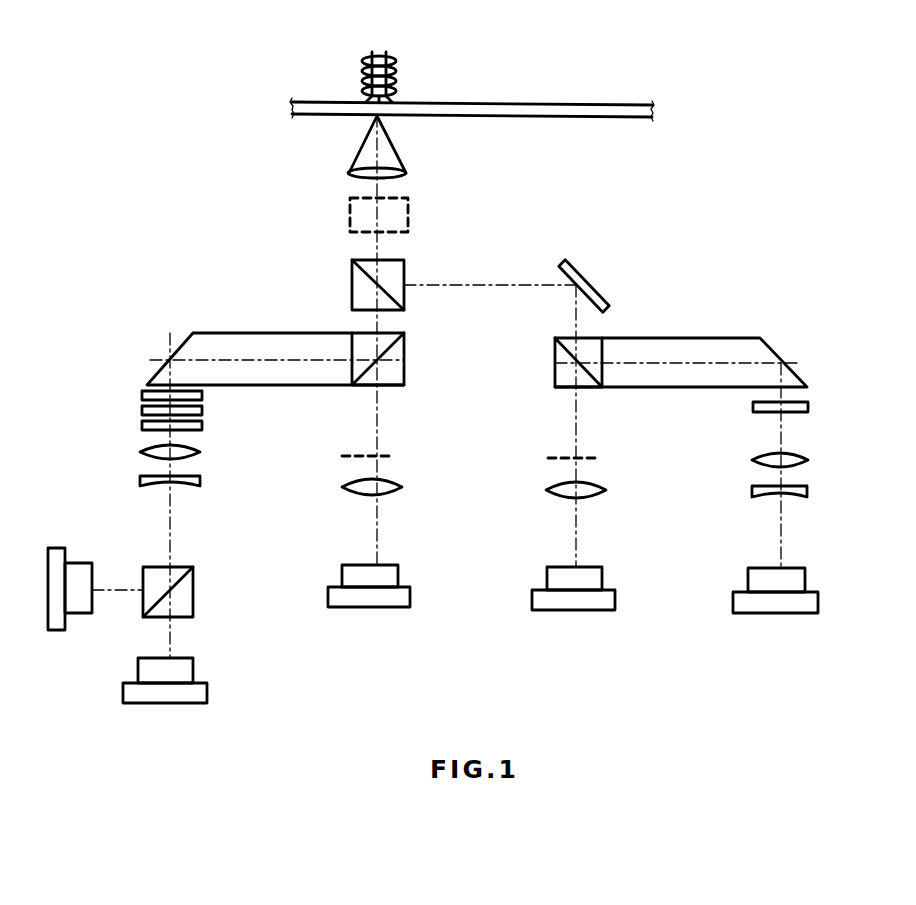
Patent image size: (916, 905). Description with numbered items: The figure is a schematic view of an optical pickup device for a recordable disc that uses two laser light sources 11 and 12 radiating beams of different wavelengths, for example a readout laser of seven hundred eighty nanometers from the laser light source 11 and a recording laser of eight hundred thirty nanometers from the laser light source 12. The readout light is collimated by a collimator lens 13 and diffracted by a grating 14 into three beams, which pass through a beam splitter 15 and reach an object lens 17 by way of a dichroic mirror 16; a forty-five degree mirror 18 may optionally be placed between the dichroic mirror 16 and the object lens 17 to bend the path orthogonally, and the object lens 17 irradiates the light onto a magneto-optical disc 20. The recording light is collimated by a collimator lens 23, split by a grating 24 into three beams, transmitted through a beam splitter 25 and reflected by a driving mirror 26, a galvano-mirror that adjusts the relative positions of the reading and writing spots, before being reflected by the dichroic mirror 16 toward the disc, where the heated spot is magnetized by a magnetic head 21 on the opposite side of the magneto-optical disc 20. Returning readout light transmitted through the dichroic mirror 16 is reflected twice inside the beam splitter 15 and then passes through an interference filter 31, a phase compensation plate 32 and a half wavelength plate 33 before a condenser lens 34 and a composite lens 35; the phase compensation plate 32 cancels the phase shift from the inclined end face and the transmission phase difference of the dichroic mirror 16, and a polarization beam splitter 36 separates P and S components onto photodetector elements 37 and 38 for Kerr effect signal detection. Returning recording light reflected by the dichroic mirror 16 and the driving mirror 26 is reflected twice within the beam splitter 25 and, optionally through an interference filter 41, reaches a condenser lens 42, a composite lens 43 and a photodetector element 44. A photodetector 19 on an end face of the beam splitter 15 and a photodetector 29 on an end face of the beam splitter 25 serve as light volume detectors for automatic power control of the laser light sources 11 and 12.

The laser light source 11 is at (392, 580).
The laser light source 12 is at (577, 602).
The collimator lens 13 is at (396, 486).
The grating 14 is at (392, 456).
The beam splitter 15 is at (258, 342).
The dichroic mirror 16 is at (397, 272).
The object lens 17 is at (404, 171).
The 45° mirror 18 is at (408, 214).
The photodetector 19 is at (404, 372).
The magneto-optical disc 20 is at (603, 105).
The magnetic head 21 is at (397, 76).
The collimator lens 23 is at (600, 488).
The grating 24 is at (598, 458).
The beam splitter 25 is at (680, 340).
The driving mirror 26 is at (580, 264).
The photodetector 29 is at (555, 374).
The interference filter 31 is at (142, 395).
The phase compensation plate 32 is at (142, 410).
The ½ wavelength plate 33 is at (142, 426).
The condenser lens 34 is at (194, 450).
The composite lens 35 is at (200, 482).
The polarization beam splitter 36 is at (186, 588).
The photodetector element 37 is at (83, 610).
The photodetector element 38 is at (183, 665).
The interference filter 41 is at (808, 405).
The condenser lens 42 is at (806, 459).
The composite lens 43 is at (808, 492).
The photodetector element 44 is at (800, 586).